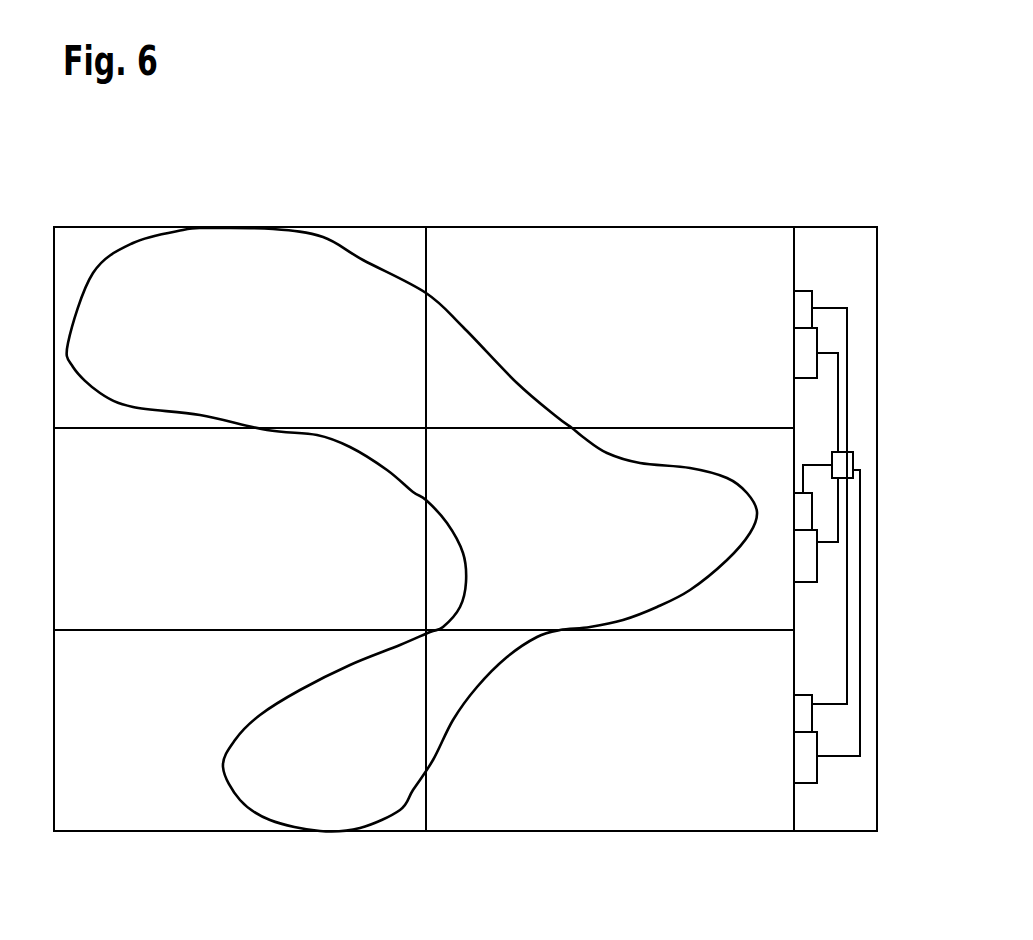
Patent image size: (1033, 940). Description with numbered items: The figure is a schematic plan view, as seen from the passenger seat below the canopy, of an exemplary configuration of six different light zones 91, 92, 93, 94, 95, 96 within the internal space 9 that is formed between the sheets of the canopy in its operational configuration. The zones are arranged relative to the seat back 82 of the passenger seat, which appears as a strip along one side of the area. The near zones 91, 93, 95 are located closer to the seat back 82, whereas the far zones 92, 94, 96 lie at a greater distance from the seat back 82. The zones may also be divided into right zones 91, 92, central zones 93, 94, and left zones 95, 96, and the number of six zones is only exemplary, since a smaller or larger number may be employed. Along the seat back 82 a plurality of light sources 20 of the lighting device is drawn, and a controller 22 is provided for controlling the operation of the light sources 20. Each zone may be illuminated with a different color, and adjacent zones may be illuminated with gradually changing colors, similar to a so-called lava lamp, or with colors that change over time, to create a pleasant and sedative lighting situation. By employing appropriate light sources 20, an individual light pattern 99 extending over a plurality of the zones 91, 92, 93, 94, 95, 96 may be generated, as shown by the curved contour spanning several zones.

The internal space 9 is at (503, 161).
The light source 20 is at (803, 298).
The controller 22 is at (843, 462).
The seat back 82 is at (845, 207).
The zone 91 is at (628, 243).
The zone 92 is at (388, 243).
The zone 93 is at (768, 445).
The zone 94 is at (72, 553).
The zone 95 is at (630, 815).
The zone 96 is at (153, 815).
The light pattern 99 is at (536, 358).